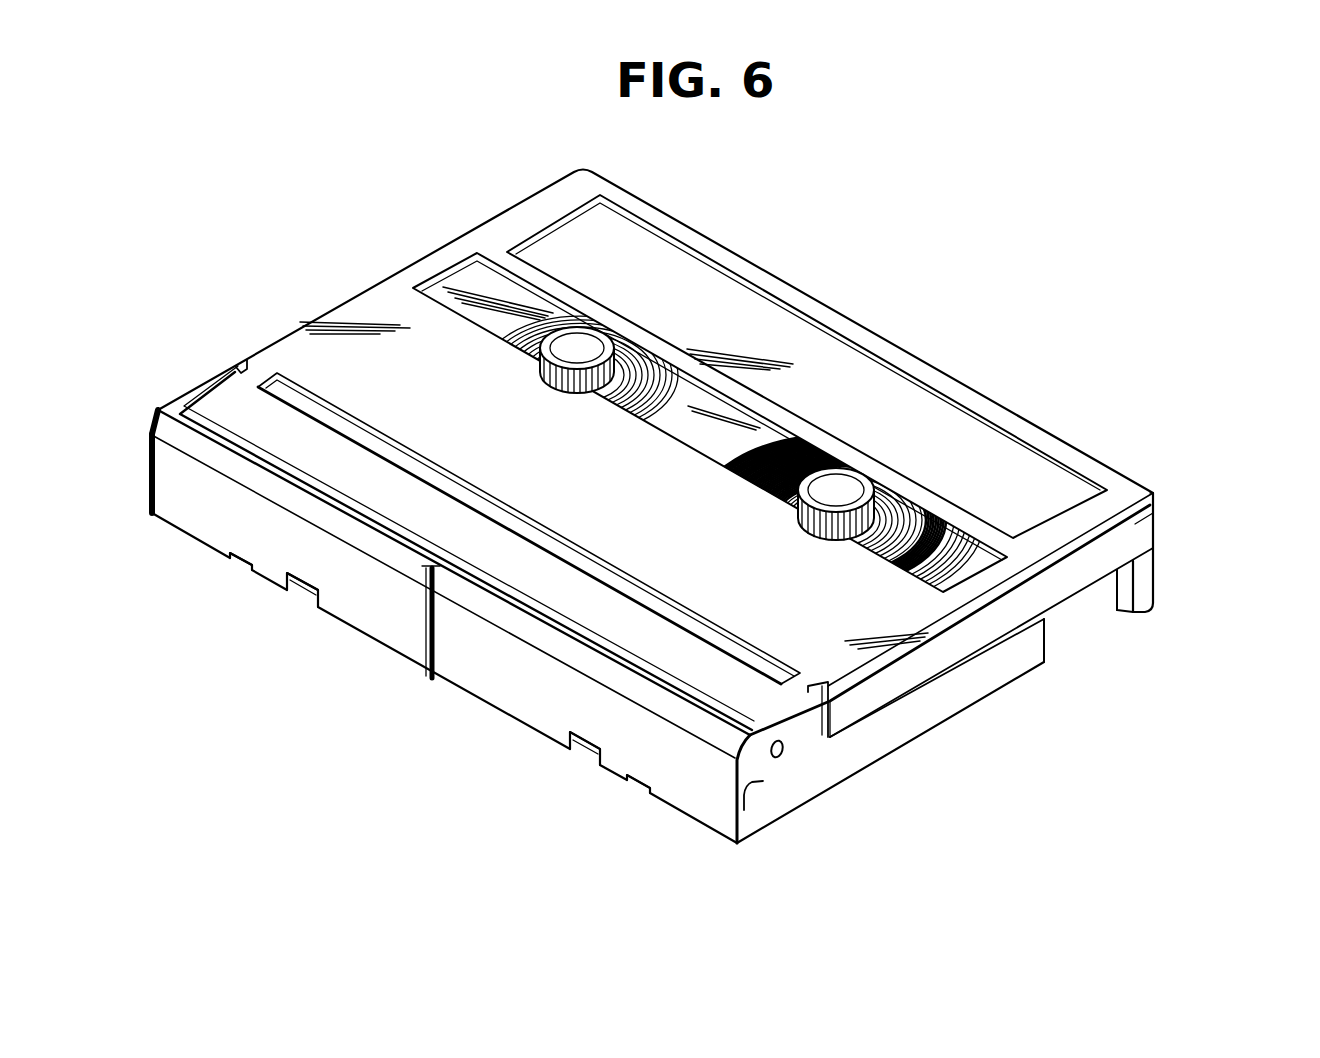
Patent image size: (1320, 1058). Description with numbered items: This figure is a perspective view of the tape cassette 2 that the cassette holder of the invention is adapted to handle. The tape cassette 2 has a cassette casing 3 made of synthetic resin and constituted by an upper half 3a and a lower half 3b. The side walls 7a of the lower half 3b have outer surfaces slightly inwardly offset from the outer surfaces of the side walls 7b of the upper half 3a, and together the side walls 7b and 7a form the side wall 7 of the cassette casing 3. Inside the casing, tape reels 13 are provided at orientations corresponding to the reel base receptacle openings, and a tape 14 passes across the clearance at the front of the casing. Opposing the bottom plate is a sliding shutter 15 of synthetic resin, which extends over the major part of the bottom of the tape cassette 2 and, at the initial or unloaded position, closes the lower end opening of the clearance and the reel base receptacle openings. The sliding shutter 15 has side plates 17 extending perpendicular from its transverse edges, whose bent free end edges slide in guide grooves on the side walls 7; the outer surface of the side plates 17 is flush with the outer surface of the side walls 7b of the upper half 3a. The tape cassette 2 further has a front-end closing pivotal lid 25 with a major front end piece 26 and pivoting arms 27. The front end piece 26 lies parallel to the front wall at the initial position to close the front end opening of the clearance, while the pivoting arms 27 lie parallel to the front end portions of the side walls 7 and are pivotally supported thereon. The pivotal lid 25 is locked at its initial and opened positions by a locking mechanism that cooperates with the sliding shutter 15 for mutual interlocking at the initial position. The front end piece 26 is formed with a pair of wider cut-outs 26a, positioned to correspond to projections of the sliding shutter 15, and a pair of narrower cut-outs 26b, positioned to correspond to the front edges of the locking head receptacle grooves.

The tape cassette 2 is at (893, 322).
The cassette casing 3 is at (1237, 589).
The upper half 3a is at (1155, 493).
The lower half 3b is at (1150, 580).
The side wall 7 is at (983, 643).
The side walls of the lower half 7a is at (1067, 623).
The side walls of the upper half 7b is at (1087, 577).
The tape reels 13 is at (565, 332).
The tape 14 is at (717, 455).
The sliding shutter 15 is at (862, 773).
The side plates 17 is at (940, 708).
The pivotal lid 25 is at (507, 715).
The front end piece 26 is at (420, 653).
The wider cut-outs 26a is at (292, 580).
The narrower cut-outs 26b is at (240, 556).
The pivoting arms 27 is at (205, 386).